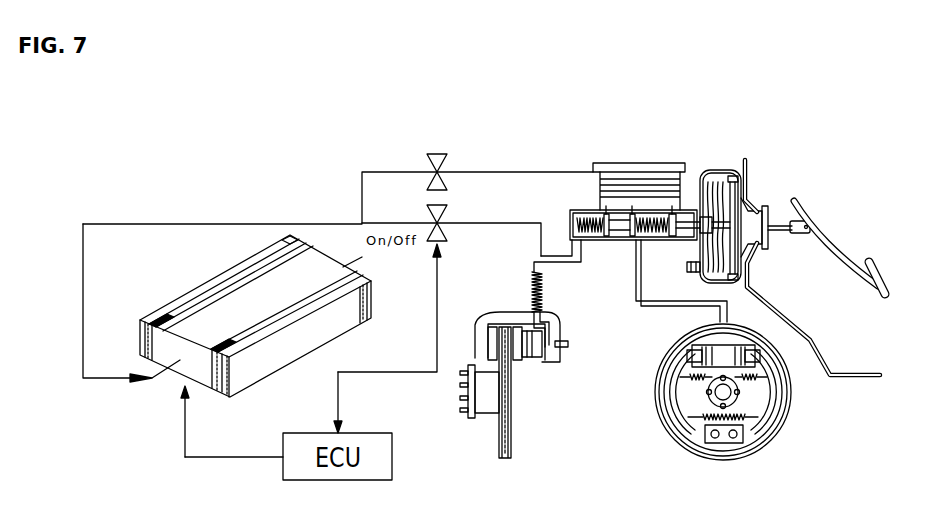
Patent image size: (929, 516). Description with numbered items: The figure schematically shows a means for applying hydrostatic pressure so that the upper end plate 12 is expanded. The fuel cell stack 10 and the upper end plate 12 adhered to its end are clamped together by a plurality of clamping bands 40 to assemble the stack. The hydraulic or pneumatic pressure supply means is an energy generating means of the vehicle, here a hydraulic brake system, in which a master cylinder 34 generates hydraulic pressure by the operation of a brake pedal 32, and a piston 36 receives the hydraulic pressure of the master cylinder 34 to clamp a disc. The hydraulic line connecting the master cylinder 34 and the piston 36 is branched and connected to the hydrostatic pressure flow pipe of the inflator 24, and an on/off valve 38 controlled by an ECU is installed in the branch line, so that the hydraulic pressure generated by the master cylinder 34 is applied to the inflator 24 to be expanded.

The fuel cell stack 10 is at (199, 301).
The upper end plate 12 is at (126, 320).
The inflator 24 is at (176, 372).
The clamping band 40 is at (247, 273).
The brake pedal 32 is at (838, 263).
The master cylinder 34 is at (632, 180).
The piston 36 is at (533, 350).
The on/off valve 38 is at (443, 212).